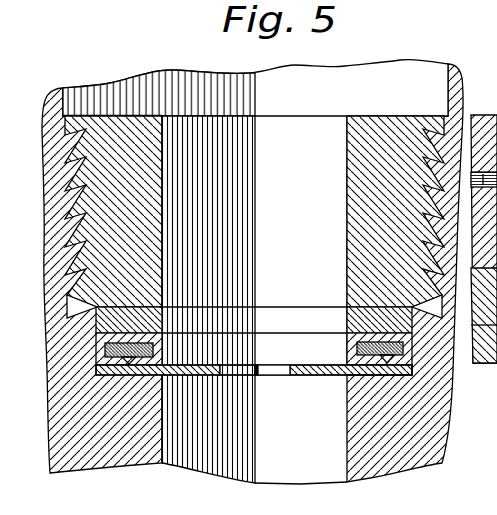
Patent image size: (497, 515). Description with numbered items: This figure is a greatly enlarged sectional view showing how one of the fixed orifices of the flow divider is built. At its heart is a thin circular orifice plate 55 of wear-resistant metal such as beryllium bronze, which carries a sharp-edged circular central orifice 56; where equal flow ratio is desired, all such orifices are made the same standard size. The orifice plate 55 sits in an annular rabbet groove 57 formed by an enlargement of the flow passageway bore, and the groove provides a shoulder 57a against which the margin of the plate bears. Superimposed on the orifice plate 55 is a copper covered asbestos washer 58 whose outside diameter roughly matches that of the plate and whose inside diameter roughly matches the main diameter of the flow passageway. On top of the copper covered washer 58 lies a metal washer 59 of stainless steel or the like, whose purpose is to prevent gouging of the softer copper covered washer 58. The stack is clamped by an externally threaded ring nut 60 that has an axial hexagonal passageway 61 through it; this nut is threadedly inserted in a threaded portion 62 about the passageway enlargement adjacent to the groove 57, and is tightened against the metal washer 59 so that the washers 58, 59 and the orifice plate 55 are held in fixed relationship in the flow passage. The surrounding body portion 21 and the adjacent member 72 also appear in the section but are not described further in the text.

The nut body 21 is at (435, 415).
The orifice plate 55 is at (312, 368).
The orifice 56 is at (272, 370).
The annular rabbet groove 57 is at (100, 360).
The shoulder 57a is at (377, 380).
The copper covered asbestos washer 58 is at (360, 353).
The metal washer 59 is at (350, 317).
The ring nut 60 is at (357, 180).
The axial hexagonal passageway 61 is at (300, 135).
The threaded portion 62 is at (47, 254).
The adjacent member 72 is at (484, 237).